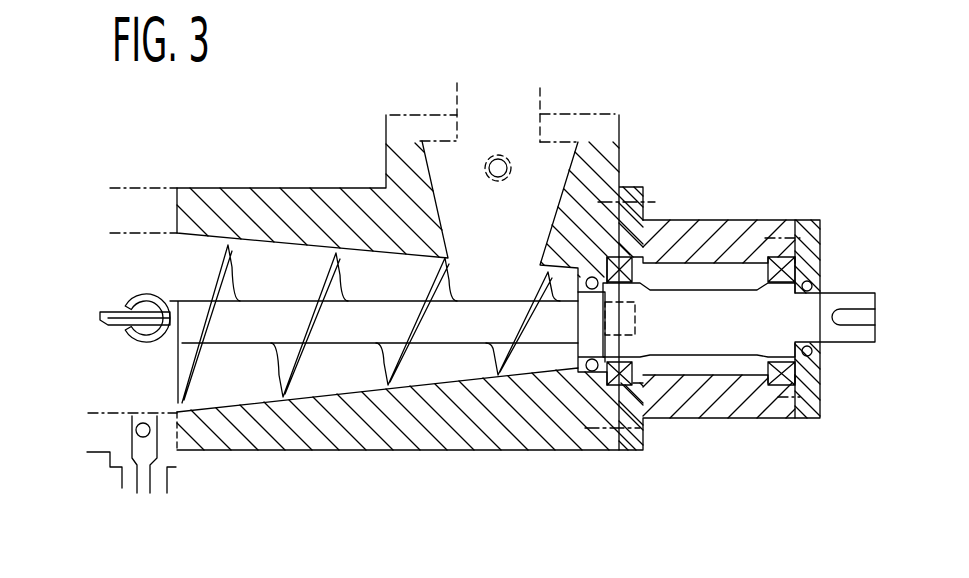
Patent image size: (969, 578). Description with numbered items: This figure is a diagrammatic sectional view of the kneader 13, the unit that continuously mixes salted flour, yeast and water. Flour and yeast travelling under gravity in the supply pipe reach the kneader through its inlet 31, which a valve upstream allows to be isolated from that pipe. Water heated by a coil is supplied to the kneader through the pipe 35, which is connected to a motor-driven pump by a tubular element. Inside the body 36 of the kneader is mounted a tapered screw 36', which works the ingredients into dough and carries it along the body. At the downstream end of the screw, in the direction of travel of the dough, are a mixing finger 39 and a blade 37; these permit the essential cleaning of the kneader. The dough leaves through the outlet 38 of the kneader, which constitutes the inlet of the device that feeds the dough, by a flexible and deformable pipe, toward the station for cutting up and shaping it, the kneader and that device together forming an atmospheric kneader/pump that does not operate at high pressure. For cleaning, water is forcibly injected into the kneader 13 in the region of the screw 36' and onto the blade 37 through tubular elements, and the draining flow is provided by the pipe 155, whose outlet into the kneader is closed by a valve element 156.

The kneader 13 is at (501, 469).
The inlet 31 is at (474, 120).
The pipe 35 is at (507, 168).
The body 36 is at (365, 437).
The tapered screw 36' is at (279, 210).
The blade 37 is at (110, 313).
The outlet 38 is at (107, 398).
The mixing finger 39 is at (134, 349).
The pipe 155 is at (145, 445).
The valve element 156 is at (139, 436).